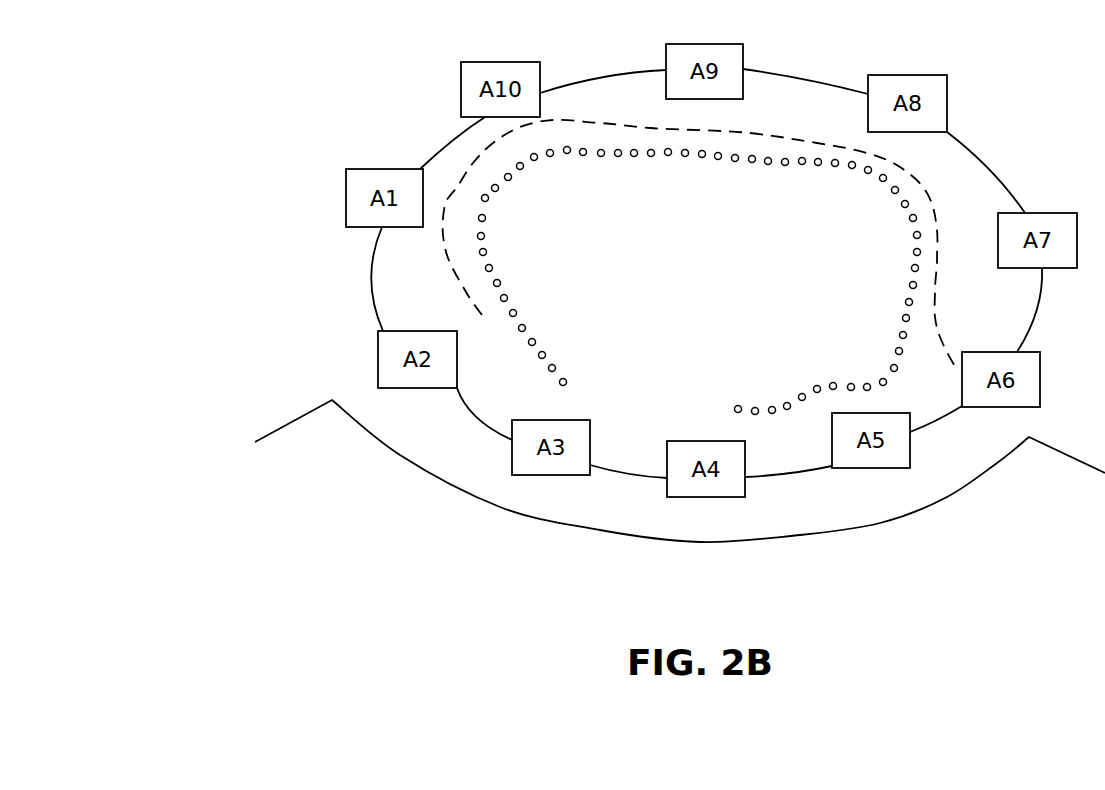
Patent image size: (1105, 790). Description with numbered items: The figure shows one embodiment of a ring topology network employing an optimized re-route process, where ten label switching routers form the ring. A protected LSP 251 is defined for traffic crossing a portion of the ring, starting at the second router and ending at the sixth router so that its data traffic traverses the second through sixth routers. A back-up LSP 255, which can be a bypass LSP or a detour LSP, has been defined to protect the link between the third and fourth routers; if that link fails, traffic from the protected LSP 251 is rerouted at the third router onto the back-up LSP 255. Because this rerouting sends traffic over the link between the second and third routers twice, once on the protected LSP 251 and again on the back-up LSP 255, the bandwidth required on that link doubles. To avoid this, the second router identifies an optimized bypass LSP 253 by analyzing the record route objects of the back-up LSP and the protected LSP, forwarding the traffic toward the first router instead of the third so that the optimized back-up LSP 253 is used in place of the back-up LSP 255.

The protected LSP 251 is at (505, 505).
The optimized bypass LSP 253 is at (450, 263).
The back-up LSP 255 is at (517, 310).